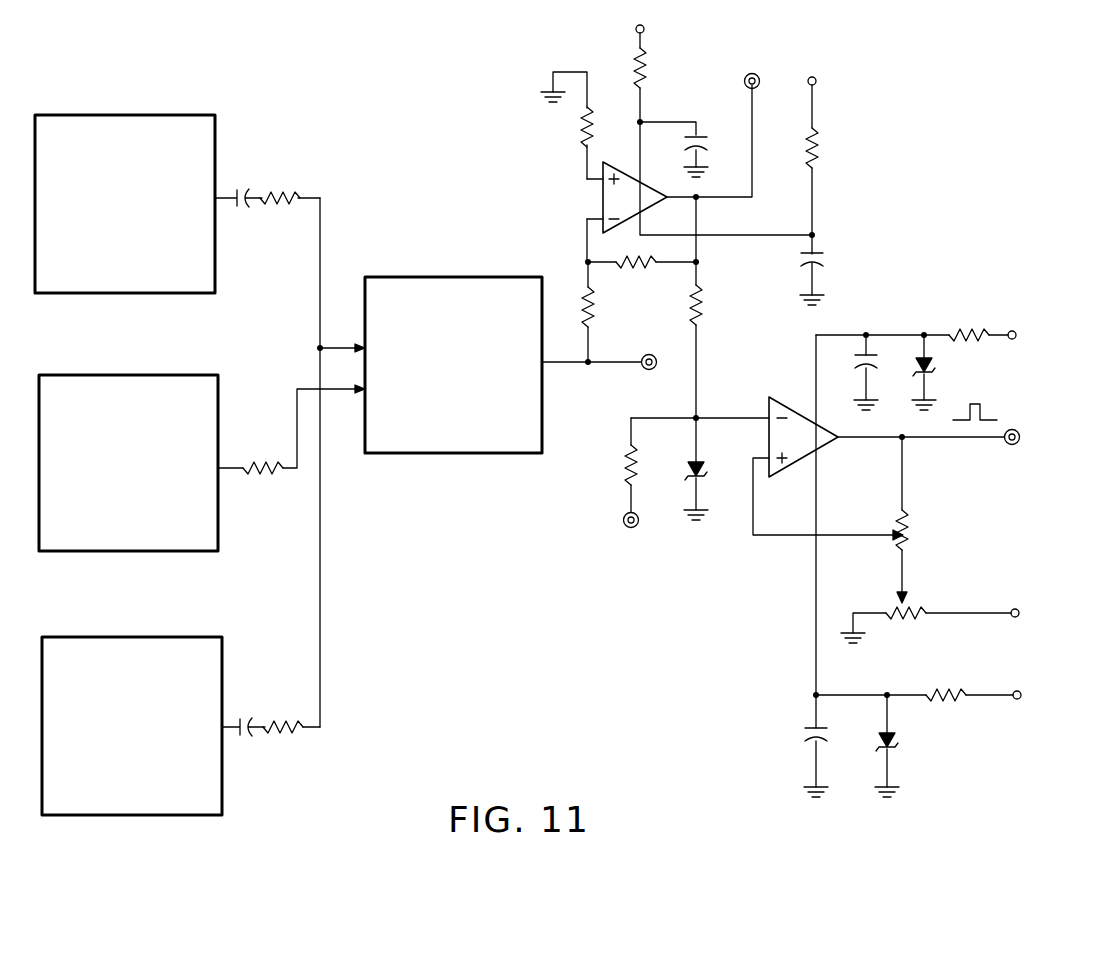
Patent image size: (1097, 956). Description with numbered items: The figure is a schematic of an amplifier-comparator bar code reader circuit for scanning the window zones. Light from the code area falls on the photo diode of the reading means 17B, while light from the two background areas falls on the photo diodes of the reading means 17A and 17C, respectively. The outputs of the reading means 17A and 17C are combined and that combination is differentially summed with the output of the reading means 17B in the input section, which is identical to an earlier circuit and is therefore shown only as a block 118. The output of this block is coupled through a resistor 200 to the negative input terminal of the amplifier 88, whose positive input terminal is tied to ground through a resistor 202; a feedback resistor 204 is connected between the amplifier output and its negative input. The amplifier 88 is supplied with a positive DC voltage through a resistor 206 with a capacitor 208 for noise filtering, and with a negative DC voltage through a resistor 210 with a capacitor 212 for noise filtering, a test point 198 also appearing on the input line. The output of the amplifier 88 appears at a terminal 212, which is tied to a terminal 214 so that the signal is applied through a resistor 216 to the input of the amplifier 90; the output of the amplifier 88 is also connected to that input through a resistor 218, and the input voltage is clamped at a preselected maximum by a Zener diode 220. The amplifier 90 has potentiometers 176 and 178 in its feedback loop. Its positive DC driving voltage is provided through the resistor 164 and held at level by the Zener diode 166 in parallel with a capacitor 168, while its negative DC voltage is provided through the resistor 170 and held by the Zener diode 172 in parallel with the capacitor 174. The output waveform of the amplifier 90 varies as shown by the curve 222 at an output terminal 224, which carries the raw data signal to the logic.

The reading means 17A is at (145, 186).
The reading means 17B is at (148, 450).
The reading means 17C is at (152, 707).
The signal processing circuit 118 is at (434, 377).
The amplifier 88 is at (618, 198).
The amplifier 90 is at (787, 435).
The test terminal 198 is at (666, 384).
The resistor 200 is at (595, 314).
The resistor 202 is at (583, 133).
The resistor 204 is at (660, 266).
The resistor 206 is at (646, 78).
The capacitor 208 is at (711, 143).
The resistor 210 is at (822, 143).
The capacitor / terminal 212 is at (755, 72).
The terminal 214 is at (640, 527).
The resistor 216 is at (625, 468).
The resistor 218 is at (703, 314).
The Zener diode 220 is at (694, 461).
The curve 222 is at (983, 413).
The output terminal 224 is at (1018, 446).
The resistor 164 is at (962, 332).
The Zener diode 166 is at (934, 373).
The capacitor 168 is at (853, 362).
The resistor 170 is at (945, 692).
The Zener diode 172 is at (906, 744).
The capacitor 174 is at (800, 738).
The potentiometer 176 is at (914, 531).
The potentiometer 178 is at (920, 610).